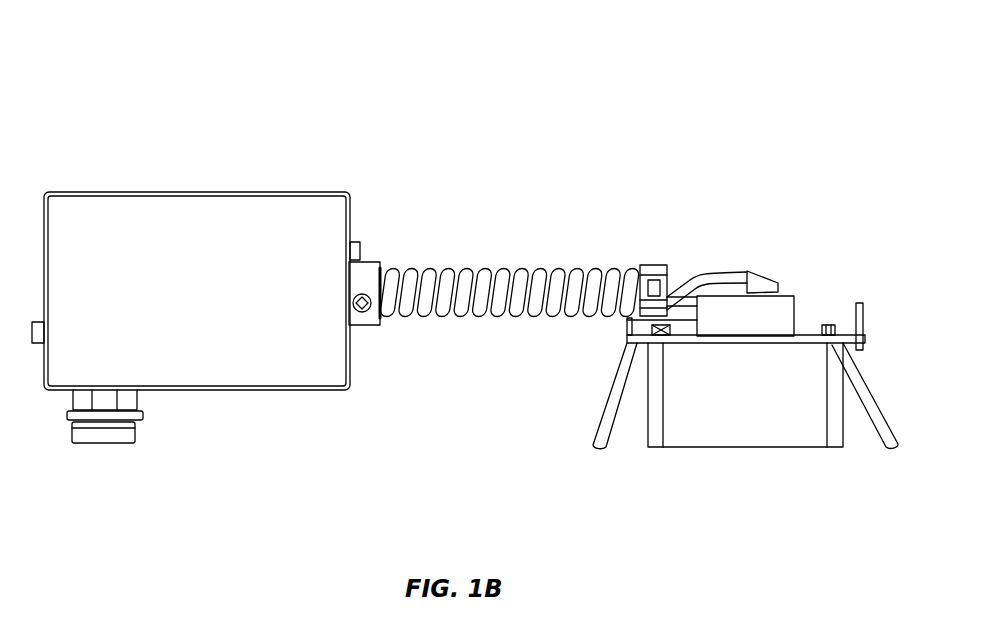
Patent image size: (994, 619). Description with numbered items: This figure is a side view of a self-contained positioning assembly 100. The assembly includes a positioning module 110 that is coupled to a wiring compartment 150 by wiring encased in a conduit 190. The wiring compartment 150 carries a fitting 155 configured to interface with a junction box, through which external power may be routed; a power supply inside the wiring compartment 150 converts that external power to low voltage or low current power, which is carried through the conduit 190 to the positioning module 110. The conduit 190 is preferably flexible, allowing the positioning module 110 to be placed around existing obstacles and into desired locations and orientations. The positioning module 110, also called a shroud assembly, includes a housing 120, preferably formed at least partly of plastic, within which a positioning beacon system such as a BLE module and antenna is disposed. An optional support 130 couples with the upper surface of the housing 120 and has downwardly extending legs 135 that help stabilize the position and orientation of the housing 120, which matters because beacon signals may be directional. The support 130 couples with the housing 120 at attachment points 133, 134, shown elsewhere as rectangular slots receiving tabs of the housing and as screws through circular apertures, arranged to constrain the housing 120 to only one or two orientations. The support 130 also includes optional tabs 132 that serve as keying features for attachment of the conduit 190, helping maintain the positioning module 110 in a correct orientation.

The self-contained positioning assembly 100 is at (118, 98).
The positioning module 110 is at (764, 207).
The housing 120 is at (772, 430).
The support 130 is at (807, 335).
The tabs 132 is at (627, 323).
The attachment points 133 is at (835, 327).
The attachment points 134 is at (668, 343).
The legs 135 is at (603, 428).
The wiring compartment 150 is at (265, 215).
The fitting 155 is at (138, 428).
The conduit 190 is at (492, 267).